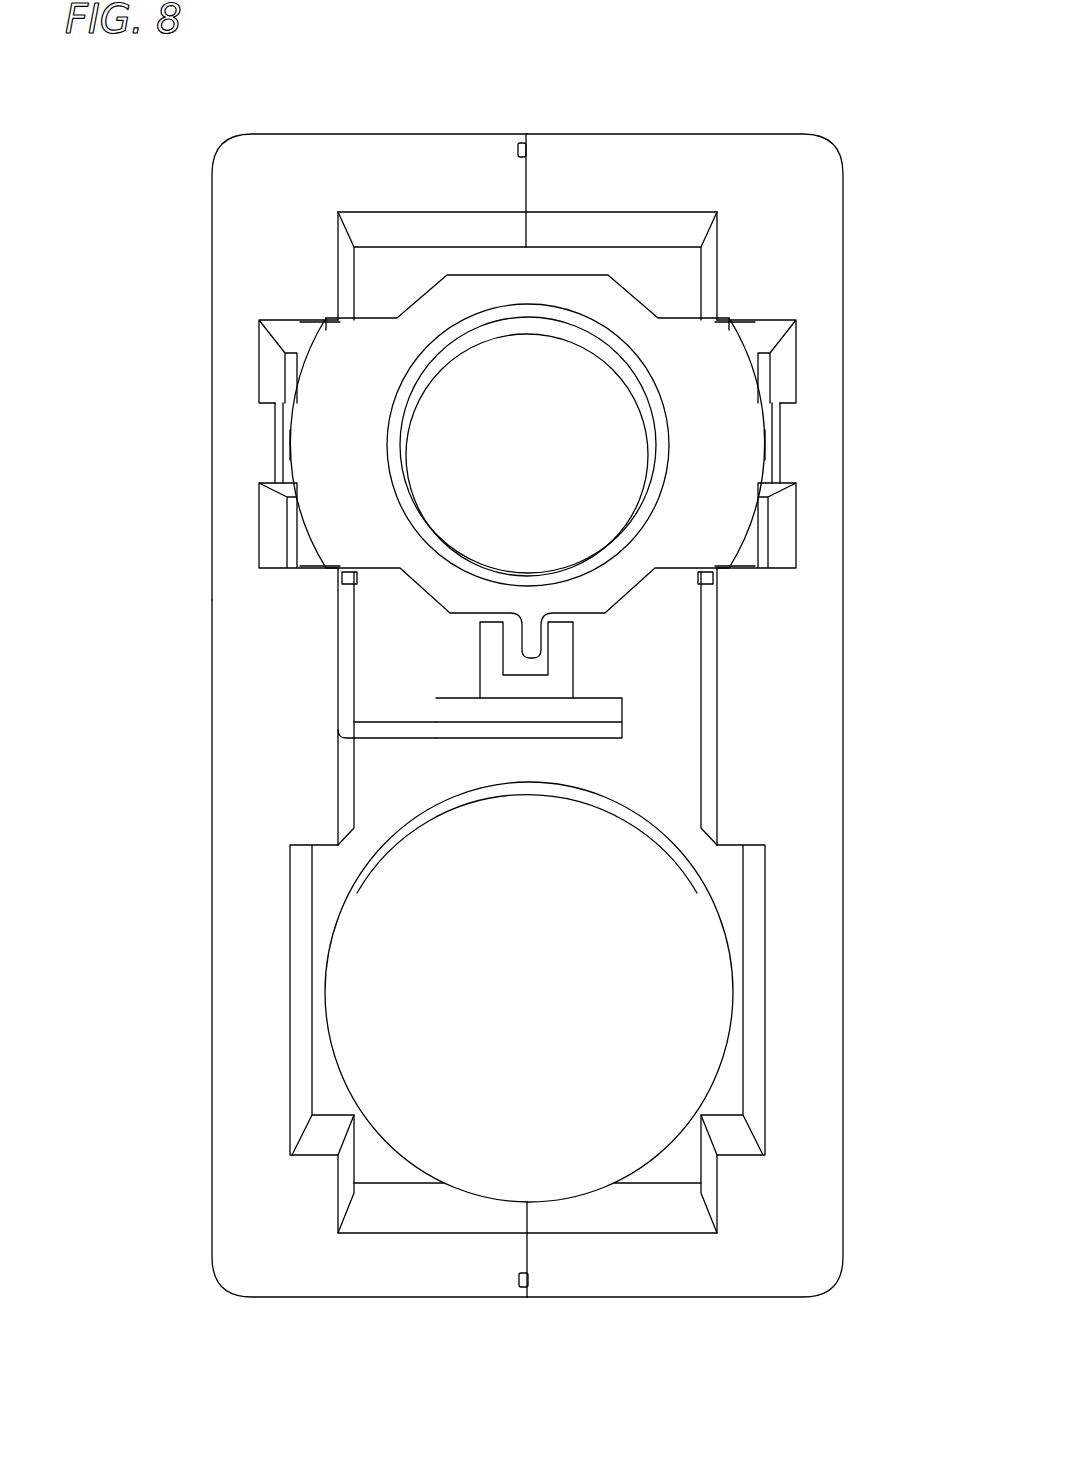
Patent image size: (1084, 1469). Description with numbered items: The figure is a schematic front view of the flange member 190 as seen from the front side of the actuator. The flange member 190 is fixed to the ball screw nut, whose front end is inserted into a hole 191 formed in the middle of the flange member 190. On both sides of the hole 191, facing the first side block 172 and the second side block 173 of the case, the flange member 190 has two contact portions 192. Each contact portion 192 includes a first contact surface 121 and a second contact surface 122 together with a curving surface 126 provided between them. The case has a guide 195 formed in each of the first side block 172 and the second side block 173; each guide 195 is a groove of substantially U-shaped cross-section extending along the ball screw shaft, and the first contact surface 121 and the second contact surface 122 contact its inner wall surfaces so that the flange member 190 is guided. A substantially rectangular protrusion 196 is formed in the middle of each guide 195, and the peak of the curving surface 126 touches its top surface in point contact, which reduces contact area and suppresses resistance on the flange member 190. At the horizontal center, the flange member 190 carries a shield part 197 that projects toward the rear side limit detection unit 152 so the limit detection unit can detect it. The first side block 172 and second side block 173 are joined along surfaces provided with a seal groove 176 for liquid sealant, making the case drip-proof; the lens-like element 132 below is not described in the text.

The first side block 172 is at (235, 165).
The second side block 173 is at (823, 165).
The seal groove 176 is at (518, 150).
The flange member 190 is at (597, 282).
The hole 191 is at (468, 356).
The contact portion 192 is at (330, 345).
The first contact surface 121 is at (328, 322).
The second contact surface 122 is at (330, 568).
The curving surface 126 is at (292, 450).
The guide 195 is at (258, 375).
The protrusion 196 is at (277, 442).
The shield part 197 is at (497, 662).
The rear side limit detection unit 152 is at (560, 672).
The second lens 132 is at (327, 990).